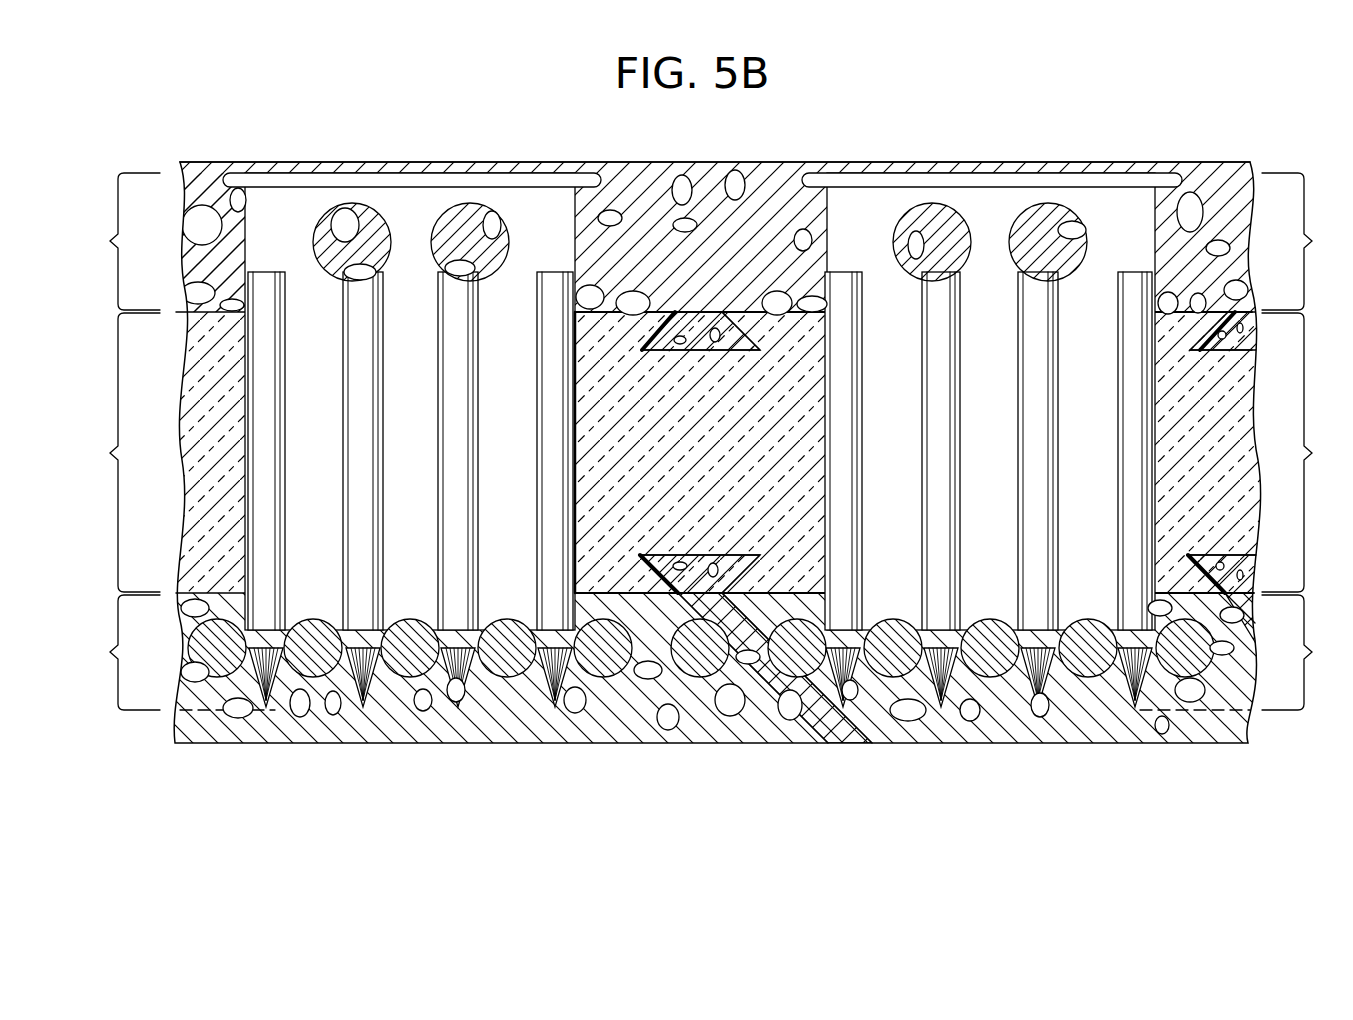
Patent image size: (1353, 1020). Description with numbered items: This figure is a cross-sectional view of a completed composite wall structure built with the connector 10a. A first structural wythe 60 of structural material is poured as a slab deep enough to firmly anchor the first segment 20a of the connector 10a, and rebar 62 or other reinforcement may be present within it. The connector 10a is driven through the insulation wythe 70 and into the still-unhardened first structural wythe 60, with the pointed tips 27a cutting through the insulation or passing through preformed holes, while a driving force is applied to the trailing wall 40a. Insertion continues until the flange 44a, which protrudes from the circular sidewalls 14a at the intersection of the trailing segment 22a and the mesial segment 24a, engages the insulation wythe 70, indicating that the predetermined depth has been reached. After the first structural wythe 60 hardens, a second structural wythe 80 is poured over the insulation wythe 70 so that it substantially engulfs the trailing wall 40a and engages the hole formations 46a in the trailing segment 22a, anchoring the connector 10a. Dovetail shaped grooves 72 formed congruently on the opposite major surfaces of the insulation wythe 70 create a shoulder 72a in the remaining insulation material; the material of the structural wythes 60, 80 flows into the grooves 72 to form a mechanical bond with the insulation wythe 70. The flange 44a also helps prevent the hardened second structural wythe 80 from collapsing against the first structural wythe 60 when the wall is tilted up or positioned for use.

The connector 10a is at (393, 527).
The sidewalls 14a is at (270, 392).
The first segment 20a is at (711, 652).
The trailing segment 22a is at (711, 241).
The mesial segment 24a is at (711, 452).
The pointed tips 27a is at (266, 707).
The trailing wall 40a is at (430, 166).
The flange 44a is at (235, 285).
The hole formations 46a is at (372, 235).
The first structural wythe 60 is at (400, 712).
The rebar 62 is at (1198, 661).
The insulation wythe 70 is at (195, 385).
The grooves 72 is at (700, 330).
The shoulder 72a is at (655, 315).
The second structural wythe 80 is at (208, 188).